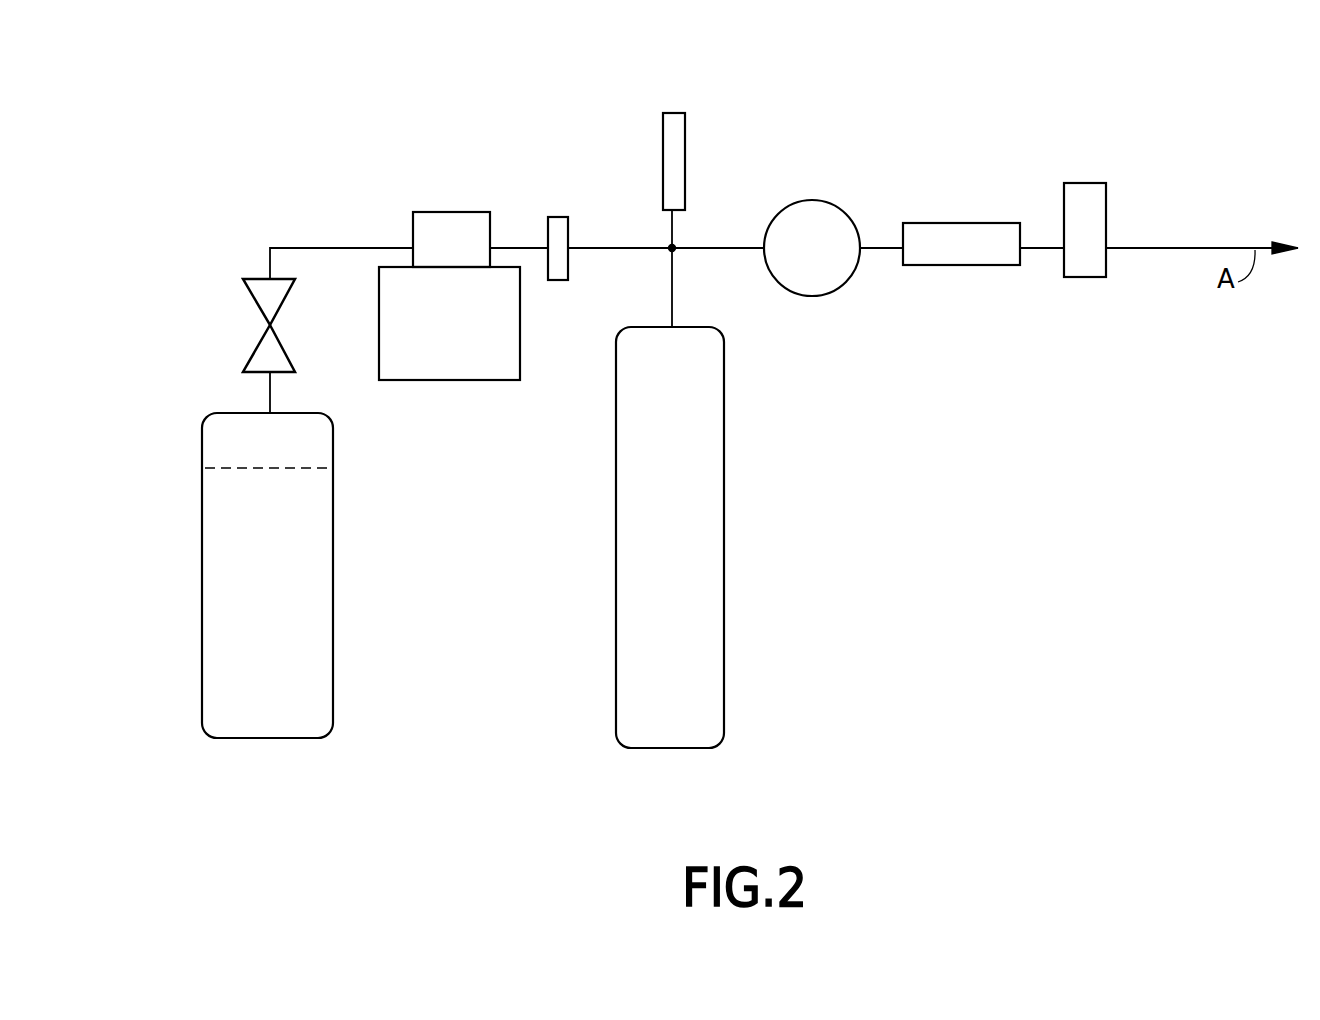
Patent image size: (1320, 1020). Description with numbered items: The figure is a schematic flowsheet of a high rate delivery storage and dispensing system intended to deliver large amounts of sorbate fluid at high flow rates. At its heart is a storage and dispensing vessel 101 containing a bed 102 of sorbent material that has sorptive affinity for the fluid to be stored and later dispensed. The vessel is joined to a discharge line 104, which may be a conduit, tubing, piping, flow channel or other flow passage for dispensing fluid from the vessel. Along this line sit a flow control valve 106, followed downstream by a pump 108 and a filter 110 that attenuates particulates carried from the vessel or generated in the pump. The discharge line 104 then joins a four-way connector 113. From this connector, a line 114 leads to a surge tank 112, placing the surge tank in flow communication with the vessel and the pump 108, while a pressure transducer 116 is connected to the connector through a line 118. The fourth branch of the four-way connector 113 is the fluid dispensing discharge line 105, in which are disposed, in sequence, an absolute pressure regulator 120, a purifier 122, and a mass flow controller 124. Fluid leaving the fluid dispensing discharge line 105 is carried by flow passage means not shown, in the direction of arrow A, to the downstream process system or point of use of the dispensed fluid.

The storage and dispensing vessel 101 is at (202, 660).
The bed of sorbent material 102 is at (202, 512).
The discharge line 104 is at (300, 248).
The fluid dispensing discharge line 105 is at (710, 248).
The flow control valve 106 is at (253, 345).
The pump 108 is at (460, 212).
The filter 110 is at (563, 217).
The surge tank 112 is at (724, 607).
The 4-way connector 113 is at (672, 265).
The line 114 is at (672, 312).
The pressure transducer 116 is at (672, 113).
The line 118 is at (672, 230).
The absolute pressure regulator 120 is at (830, 293).
The purifier 122 is at (988, 223).
The mass flow controller 124 is at (1088, 183).